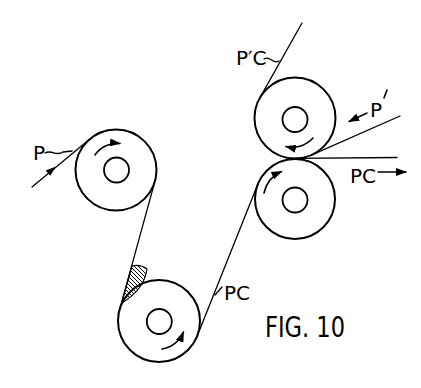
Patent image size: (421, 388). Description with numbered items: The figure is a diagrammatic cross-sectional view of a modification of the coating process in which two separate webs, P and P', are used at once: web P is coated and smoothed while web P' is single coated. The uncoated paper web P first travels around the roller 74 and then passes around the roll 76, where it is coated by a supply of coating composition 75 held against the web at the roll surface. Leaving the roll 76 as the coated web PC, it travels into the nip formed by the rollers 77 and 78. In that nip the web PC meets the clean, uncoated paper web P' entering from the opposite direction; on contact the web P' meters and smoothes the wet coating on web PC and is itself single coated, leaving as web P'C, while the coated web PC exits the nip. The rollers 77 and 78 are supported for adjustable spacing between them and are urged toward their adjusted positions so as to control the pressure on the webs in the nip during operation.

The roller 74 is at (105, 197).
The supply of coating composition 75 is at (143, 273).
The roll 76 is at (190, 338).
The roller 77 is at (298, 89).
The roller 78 is at (262, 200).